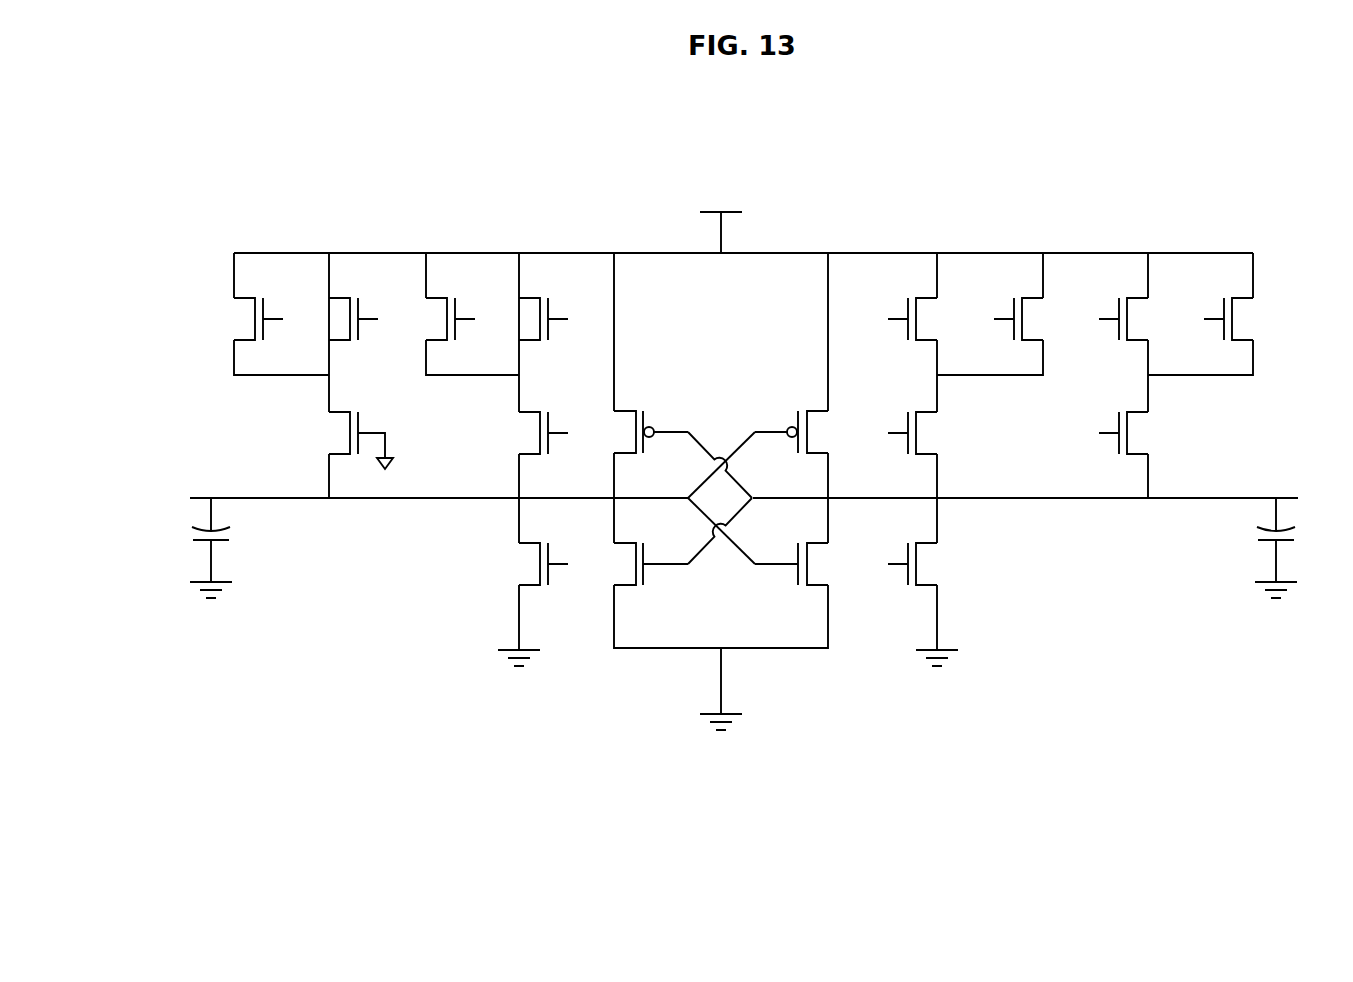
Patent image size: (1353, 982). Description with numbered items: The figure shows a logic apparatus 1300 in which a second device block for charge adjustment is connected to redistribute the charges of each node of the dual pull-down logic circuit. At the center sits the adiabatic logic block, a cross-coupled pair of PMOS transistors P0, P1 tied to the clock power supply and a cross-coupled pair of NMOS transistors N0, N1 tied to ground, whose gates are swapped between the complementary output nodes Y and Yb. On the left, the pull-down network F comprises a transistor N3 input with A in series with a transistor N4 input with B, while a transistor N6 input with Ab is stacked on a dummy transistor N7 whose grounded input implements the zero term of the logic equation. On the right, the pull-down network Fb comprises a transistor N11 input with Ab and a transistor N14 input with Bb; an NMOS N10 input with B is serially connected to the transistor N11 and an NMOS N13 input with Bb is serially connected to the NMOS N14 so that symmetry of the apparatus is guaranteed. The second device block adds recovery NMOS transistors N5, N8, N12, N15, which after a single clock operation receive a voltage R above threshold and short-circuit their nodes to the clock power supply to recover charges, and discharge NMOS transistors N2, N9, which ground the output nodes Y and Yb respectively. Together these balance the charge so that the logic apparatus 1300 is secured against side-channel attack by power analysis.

The logic apparatus 1300 is at (294, 178).
The NMOS transistor N8 is at (252, 319).
The transistor N6 is at (348, 319).
The NMOS transistor N5 is at (444, 319).
The transistor N3 is at (537, 319).
The dummy transistor N7 is at (355, 440).
The transistor N4 is at (537, 433).
The NMOS transistor N2 is at (537, 564).
The PMOS transistor P0 is at (646, 432).
The NMOS transistor N0 is at (644, 564).
The NMOS transistor N10 is at (926, 319).
The NMOS transistor N12 is at (1033, 319).
The NMOS transistor N13 is at (1137, 319).
The NMOS transistor N15 is at (1240, 319).
The transistor N11 is at (926, 433).
The transistor N14 is at (1137, 433).
The NMOS transistor N9 is at (919, 564).
The PMOS transistor P1 is at (797, 432).
The NMOS transistor N1 is at (798, 564).